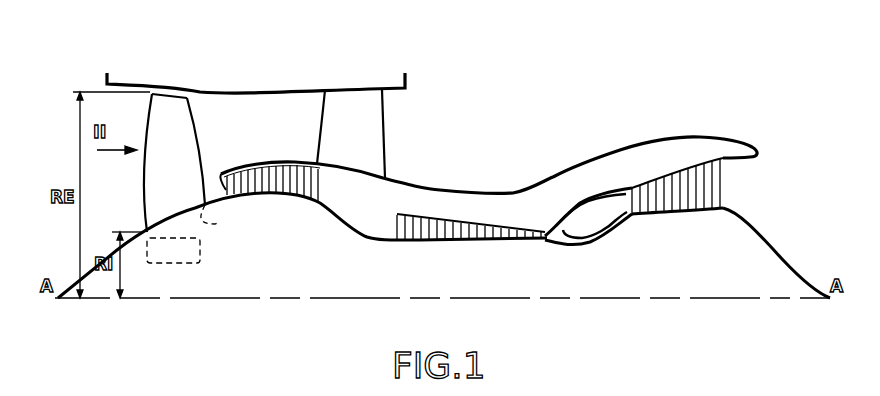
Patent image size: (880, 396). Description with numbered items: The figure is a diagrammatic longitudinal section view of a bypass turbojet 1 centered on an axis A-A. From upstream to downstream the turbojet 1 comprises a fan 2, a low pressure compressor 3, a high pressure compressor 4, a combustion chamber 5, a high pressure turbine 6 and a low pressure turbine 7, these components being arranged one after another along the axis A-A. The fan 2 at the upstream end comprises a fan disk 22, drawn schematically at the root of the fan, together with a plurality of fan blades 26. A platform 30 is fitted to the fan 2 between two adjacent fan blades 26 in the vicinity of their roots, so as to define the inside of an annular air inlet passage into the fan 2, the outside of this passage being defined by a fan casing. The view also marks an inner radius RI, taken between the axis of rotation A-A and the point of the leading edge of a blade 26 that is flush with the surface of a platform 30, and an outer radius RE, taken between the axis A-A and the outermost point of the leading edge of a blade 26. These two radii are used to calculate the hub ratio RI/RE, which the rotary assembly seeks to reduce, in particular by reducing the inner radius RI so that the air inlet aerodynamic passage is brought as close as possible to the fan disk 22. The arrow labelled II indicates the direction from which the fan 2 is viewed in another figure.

The bypass turbojet 1 is at (478, 116).
The fan 2 is at (180, 88).
The low pressure compressor 3 is at (250, 156).
The high pressure compressor 4 is at (445, 200).
The combustion chamber 5 is at (583, 216).
The high pressure turbine 6 is at (644, 166).
The low pressure turbine 7 is at (697, 128).
The fan disk 22 is at (183, 249).
The fan blade 26 is at (165, 188).
The platform 30 is at (224, 219).